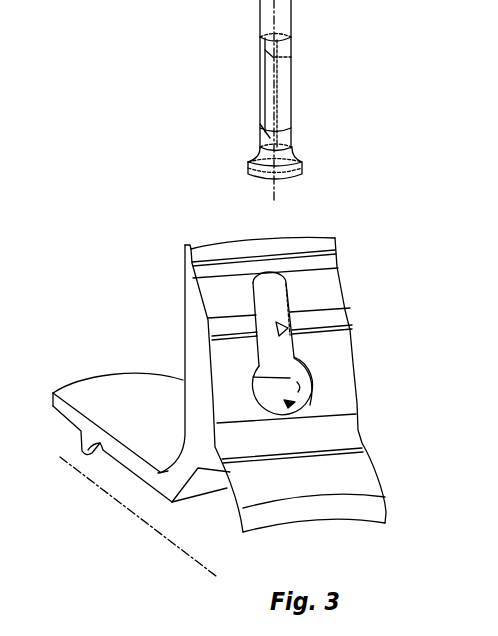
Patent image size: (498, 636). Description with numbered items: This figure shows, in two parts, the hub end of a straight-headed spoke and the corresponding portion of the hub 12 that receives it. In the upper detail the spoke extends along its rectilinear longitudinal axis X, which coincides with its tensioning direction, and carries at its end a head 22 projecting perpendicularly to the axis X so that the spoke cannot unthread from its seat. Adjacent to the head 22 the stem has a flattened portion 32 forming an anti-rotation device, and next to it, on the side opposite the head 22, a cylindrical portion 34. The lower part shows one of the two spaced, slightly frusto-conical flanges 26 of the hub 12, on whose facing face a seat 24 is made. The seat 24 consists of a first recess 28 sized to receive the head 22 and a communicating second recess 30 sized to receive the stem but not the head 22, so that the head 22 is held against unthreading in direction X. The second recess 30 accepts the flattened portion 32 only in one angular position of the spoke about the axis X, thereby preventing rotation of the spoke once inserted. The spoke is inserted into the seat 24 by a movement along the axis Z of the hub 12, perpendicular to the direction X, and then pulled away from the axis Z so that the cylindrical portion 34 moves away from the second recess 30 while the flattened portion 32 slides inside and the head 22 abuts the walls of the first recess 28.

The hub 12 is at (119, 392).
The head 22 is at (292, 173).
The seat 24 is at (294, 405).
The flange 26 is at (193, 340).
The first recess 28 is at (297, 386).
The second recess 30 is at (279, 334).
The flattened portion 32 is at (265, 83).
The cylindrical portion 34 is at (270, 3).
The longitudinal axis X is at (280, 10).
The axis of the hub Z is at (168, 538).